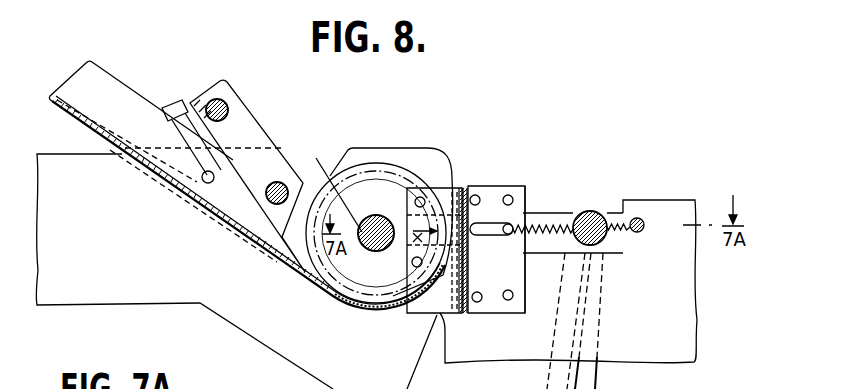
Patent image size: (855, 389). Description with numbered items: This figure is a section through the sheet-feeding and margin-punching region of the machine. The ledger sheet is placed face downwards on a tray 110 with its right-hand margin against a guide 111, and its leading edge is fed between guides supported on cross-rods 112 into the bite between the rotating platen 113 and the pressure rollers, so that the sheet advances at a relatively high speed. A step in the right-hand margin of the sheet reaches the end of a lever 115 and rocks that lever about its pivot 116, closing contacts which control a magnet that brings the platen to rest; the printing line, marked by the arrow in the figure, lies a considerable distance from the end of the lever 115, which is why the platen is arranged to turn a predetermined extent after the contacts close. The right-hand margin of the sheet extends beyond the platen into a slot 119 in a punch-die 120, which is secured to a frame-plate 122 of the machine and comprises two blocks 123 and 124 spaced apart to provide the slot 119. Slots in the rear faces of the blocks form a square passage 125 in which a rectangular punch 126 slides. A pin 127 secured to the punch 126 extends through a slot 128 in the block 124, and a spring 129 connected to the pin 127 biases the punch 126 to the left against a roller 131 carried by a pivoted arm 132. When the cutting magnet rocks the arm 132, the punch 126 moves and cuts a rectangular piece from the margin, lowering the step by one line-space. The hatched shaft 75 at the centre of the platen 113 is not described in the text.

The shaft 75 is at (368, 244).
The tray 110 is at (137, 167).
The guide 111 is at (108, 92).
The cross-rods 112 is at (275, 185).
The platen 113 is at (343, 180).
The lever 115 is at (270, 240).
The pivot 116 is at (220, 160).
The slot 119 is at (412, 311).
The punch-die 120 is at (430, 305).
The frame-plate 122 is at (662, 212).
The block 123 is at (434, 202).
The block 124 is at (490, 190).
The square passage 125 is at (527, 193).
The rectangular punch 126 is at (553, 244).
The pin 127 is at (513, 228).
The slot 128 is at (492, 236).
The spring 129 is at (558, 234).
The roller 131 is at (606, 248).
The arm 132 is at (588, 376).